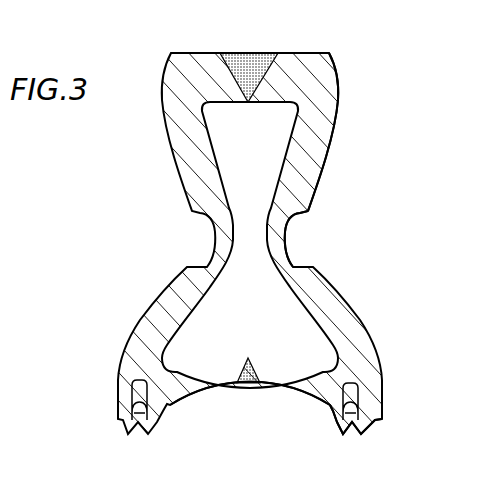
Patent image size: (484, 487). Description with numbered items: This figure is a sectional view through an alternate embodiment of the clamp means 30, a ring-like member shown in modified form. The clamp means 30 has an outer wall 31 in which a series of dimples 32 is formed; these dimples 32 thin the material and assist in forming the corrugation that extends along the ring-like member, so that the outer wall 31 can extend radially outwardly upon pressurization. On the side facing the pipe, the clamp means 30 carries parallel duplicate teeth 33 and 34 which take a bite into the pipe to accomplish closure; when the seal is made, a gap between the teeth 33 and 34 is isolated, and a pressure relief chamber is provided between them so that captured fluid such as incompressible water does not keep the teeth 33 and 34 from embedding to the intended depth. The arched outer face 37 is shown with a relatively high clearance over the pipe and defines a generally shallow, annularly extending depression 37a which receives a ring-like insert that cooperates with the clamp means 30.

The clamp means 30 is at (362, 43).
The outer wall 31 is at (317, 185).
The dimples 32 is at (287, 247).
The tooth 33 is at (343, 428).
The tooth 34 is at (363, 430).
The outer face 37 is at (271, 388).
The annularly extending depression 37a is at (215, 393).